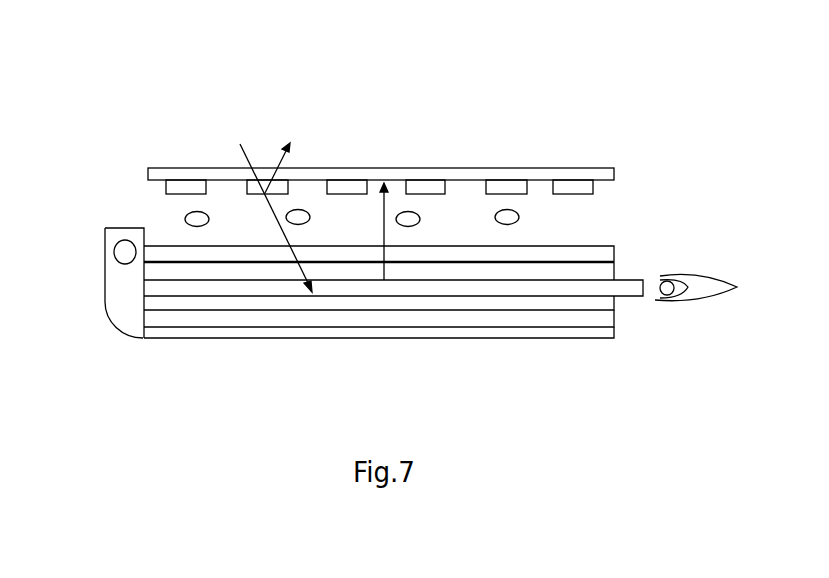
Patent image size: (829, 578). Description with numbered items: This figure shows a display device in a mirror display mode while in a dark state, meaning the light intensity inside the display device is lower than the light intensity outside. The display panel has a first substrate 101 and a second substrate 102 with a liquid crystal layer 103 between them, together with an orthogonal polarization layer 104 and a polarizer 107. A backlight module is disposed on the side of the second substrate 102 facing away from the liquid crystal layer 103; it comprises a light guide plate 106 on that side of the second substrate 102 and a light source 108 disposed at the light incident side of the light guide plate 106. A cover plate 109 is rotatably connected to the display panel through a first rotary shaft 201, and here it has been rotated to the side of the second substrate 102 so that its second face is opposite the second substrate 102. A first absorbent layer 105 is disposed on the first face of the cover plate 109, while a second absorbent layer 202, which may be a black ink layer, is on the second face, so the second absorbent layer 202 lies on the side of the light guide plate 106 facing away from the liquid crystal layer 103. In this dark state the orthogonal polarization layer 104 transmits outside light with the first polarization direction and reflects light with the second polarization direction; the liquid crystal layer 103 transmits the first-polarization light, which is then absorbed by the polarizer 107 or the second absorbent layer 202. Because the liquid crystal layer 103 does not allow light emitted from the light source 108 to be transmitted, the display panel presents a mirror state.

The first substrate 101 is at (610, 174).
The orthogonal polarization layer 104 is at (183, 188).
The liquid crystal layer 103 is at (600, 218).
The first rotary shaft 201 is at (125, 251).
The second substrate 102 is at (556, 252).
The polarizer 107 is at (489, 270).
The light guide plate 106 is at (413, 288).
The second absorbent layer 202 is at (343, 304).
The cover plate 109 is at (275, 320).
The first absorbent layer 105 is at (203, 338).
The light source 108 is at (668, 295).